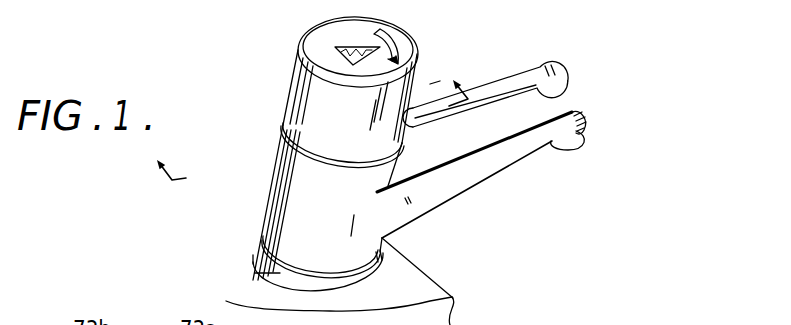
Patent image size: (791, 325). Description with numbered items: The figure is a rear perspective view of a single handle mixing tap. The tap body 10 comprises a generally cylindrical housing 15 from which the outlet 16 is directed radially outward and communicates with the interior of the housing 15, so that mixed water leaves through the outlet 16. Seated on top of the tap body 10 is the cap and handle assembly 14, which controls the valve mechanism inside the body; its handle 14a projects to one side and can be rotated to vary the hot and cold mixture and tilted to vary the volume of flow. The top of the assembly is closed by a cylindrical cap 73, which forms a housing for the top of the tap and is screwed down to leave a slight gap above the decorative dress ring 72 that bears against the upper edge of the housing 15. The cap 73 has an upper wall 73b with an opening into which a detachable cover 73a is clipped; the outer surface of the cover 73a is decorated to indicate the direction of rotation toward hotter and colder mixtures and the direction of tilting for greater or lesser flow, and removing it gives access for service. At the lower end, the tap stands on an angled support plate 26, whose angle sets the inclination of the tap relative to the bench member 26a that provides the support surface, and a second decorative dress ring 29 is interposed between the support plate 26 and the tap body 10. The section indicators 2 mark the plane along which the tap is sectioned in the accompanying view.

The section line 2 is at (307, 117).
The tap body 10 is at (260, 200).
The cap and handle assembly 14 is at (426, 46).
The handle 14a is at (515, 86).
The housing 15 is at (327, 190).
The outlet 16 is at (507, 155).
The angled support plate 26 is at (282, 274).
The bench member 26a is at (420, 284).
The dress ring 29 is at (258, 229).
The dress ring 72 is at (318, 152).
The cylindrical cap 73 is at (315, 110).
The detachable cover 73a is at (323, 38).
The upper wall of the cap 73b is at (300, 63).